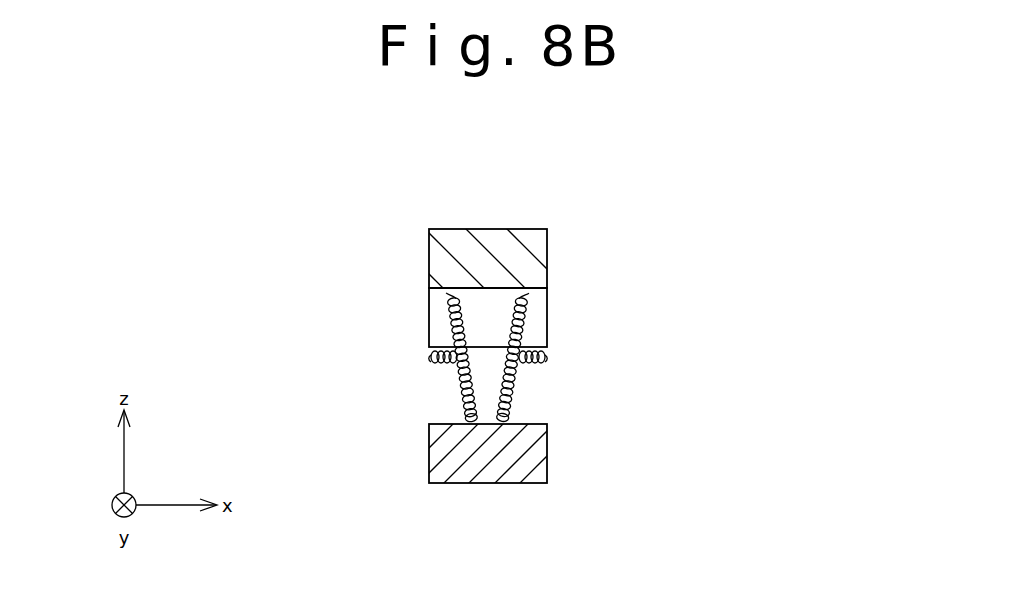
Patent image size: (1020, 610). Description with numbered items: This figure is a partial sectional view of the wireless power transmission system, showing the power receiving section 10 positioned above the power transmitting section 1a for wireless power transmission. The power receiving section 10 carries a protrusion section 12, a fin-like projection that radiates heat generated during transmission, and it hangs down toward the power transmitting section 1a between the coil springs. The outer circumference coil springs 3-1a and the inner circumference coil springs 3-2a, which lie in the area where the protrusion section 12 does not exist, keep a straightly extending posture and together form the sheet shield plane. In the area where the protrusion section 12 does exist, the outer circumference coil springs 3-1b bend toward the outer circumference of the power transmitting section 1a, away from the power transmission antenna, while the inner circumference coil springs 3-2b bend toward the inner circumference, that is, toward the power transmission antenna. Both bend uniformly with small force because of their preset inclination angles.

The power receiving section 10 is at (540, 253).
The protrusion section 12 is at (540, 302).
The power transmitting section 1a is at (540, 453).
The outer circumference coil springs 3-1a is at (530, 317).
The outer circumference coil springs 3-1b is at (548, 357).
The inner circumference coil springs 3-2a is at (448, 312).
The inner circumference coil springs 3-2b is at (428, 357).